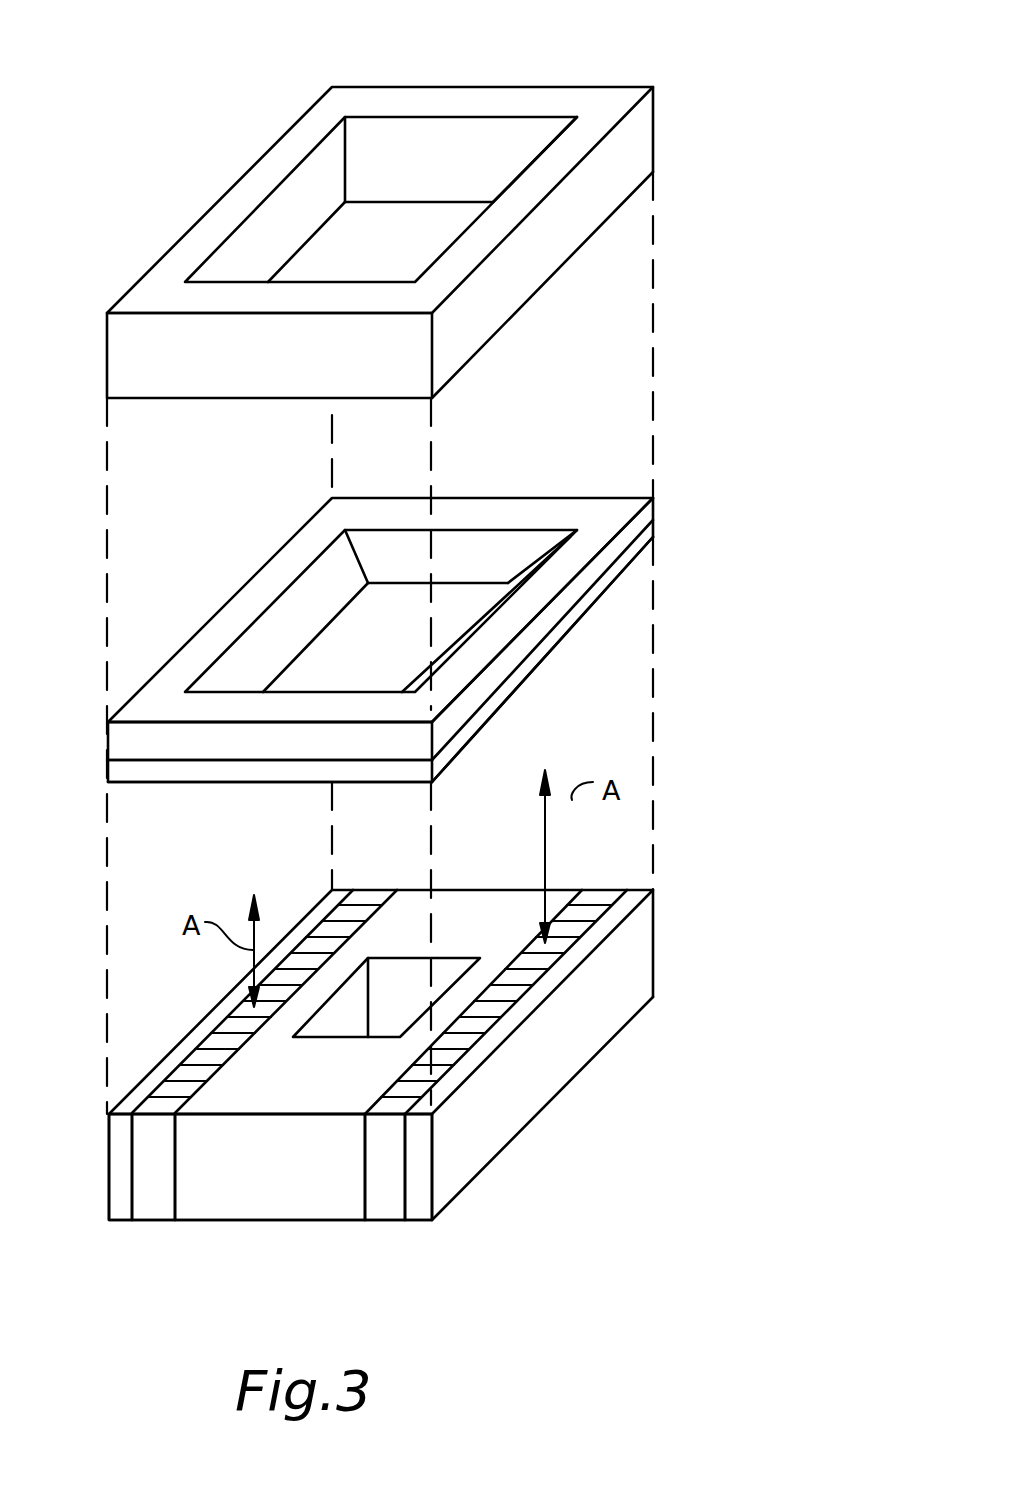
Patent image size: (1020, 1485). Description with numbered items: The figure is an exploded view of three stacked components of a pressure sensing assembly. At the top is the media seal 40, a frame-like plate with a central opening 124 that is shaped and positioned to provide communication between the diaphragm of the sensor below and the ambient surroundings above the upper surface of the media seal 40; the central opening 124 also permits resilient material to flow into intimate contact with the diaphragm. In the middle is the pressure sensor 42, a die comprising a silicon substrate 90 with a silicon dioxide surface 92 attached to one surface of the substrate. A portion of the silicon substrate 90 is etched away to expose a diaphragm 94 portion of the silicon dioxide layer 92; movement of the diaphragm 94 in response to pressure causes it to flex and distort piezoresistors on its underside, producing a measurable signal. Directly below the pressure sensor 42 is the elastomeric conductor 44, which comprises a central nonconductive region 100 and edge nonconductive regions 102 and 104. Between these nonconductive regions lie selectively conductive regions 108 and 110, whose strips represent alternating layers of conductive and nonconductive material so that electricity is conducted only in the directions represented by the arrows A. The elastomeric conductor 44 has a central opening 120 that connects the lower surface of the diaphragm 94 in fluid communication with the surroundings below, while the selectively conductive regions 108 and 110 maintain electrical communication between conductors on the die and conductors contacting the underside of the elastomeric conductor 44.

The media seal 40 is at (627, 140).
The central opening 124 is at (438, 145).
The pressure sensor 42 is at (517, 508).
The silicon substrate 90 is at (642, 527).
The silicon dioxide surface 92 is at (642, 553).
The diaphragm 94 is at (400, 605).
The elastomeric conductor 44 is at (555, 905).
The central nonconductive region 100 is at (278, 1193).
The edge nonconductive region 102 is at (118, 1203).
The edge nonconductive region 104 is at (413, 1193).
The selectively conductive region 108 is at (157, 1197).
The selectively conductive region 110 is at (382, 1203).
The central opening 120 is at (407, 977).